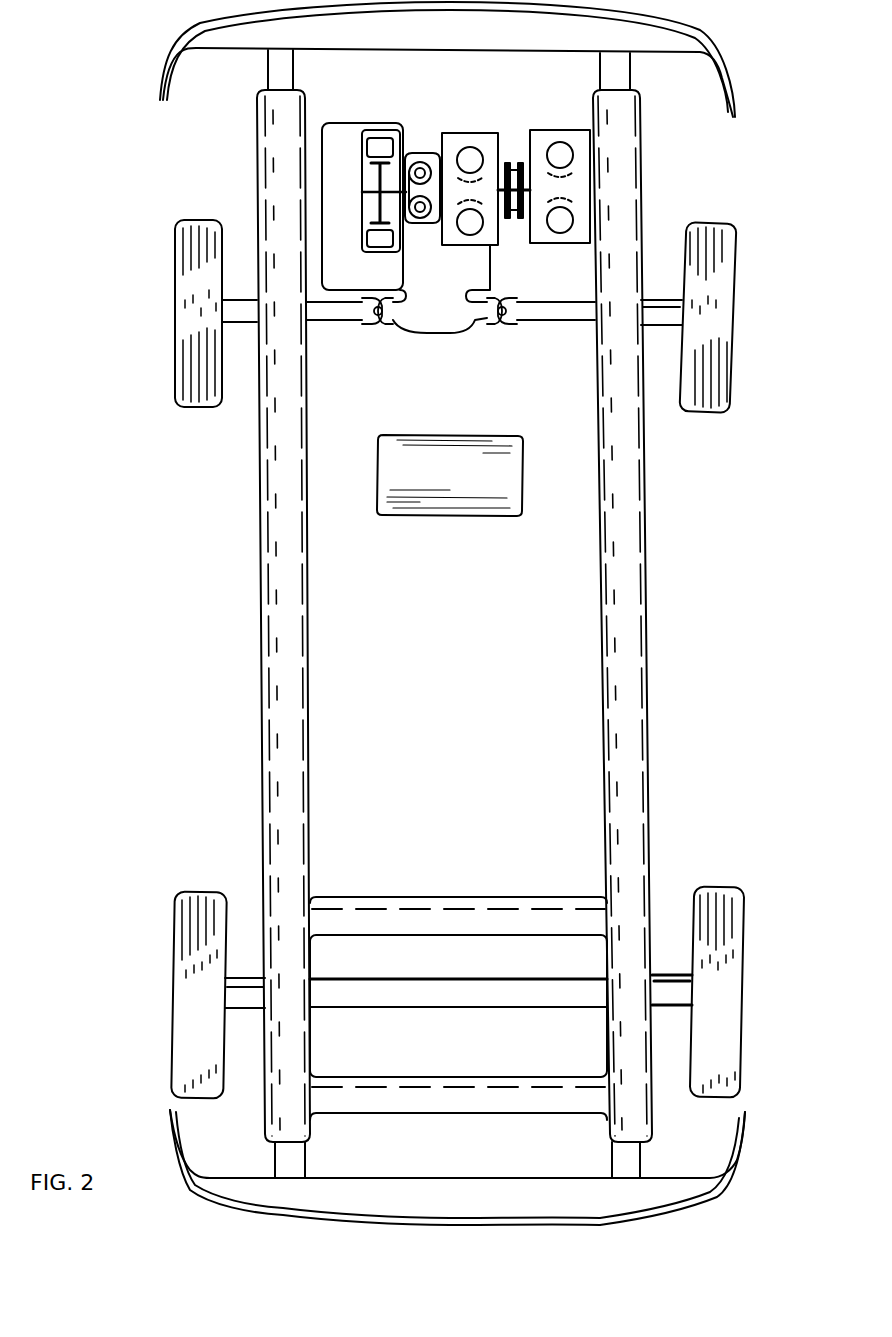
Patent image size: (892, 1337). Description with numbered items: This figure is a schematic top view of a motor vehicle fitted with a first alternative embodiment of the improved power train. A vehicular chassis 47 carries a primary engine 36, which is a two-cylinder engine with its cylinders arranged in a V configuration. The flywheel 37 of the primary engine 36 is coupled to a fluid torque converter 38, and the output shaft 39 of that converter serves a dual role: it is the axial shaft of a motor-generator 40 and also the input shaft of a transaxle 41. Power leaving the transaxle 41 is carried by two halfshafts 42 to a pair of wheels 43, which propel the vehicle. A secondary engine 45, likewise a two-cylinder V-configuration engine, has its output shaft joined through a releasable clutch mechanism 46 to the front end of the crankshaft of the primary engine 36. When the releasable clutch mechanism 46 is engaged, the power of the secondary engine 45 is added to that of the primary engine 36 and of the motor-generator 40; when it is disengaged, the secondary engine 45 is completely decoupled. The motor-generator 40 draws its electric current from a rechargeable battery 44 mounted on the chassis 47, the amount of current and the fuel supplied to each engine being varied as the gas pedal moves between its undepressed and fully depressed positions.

The primary engine 36 is at (471, 132).
The flywheel 37 is at (431, 152).
The fluid torque converter 38 is at (408, 150).
The output shaft 39 is at (397, 210).
The motor-generator 40 is at (375, 137).
The transaxle 41 is at (445, 312).
The halfshafts 42 is at (333, 323).
The wheels 43 is at (175, 290).
The rechargeable battery 44 is at (450, 475).
The secondary engine 45 is at (555, 130).
The releasable clutch mechanism 46 is at (513, 150).
The vehicular chassis 47 is at (650, 655).